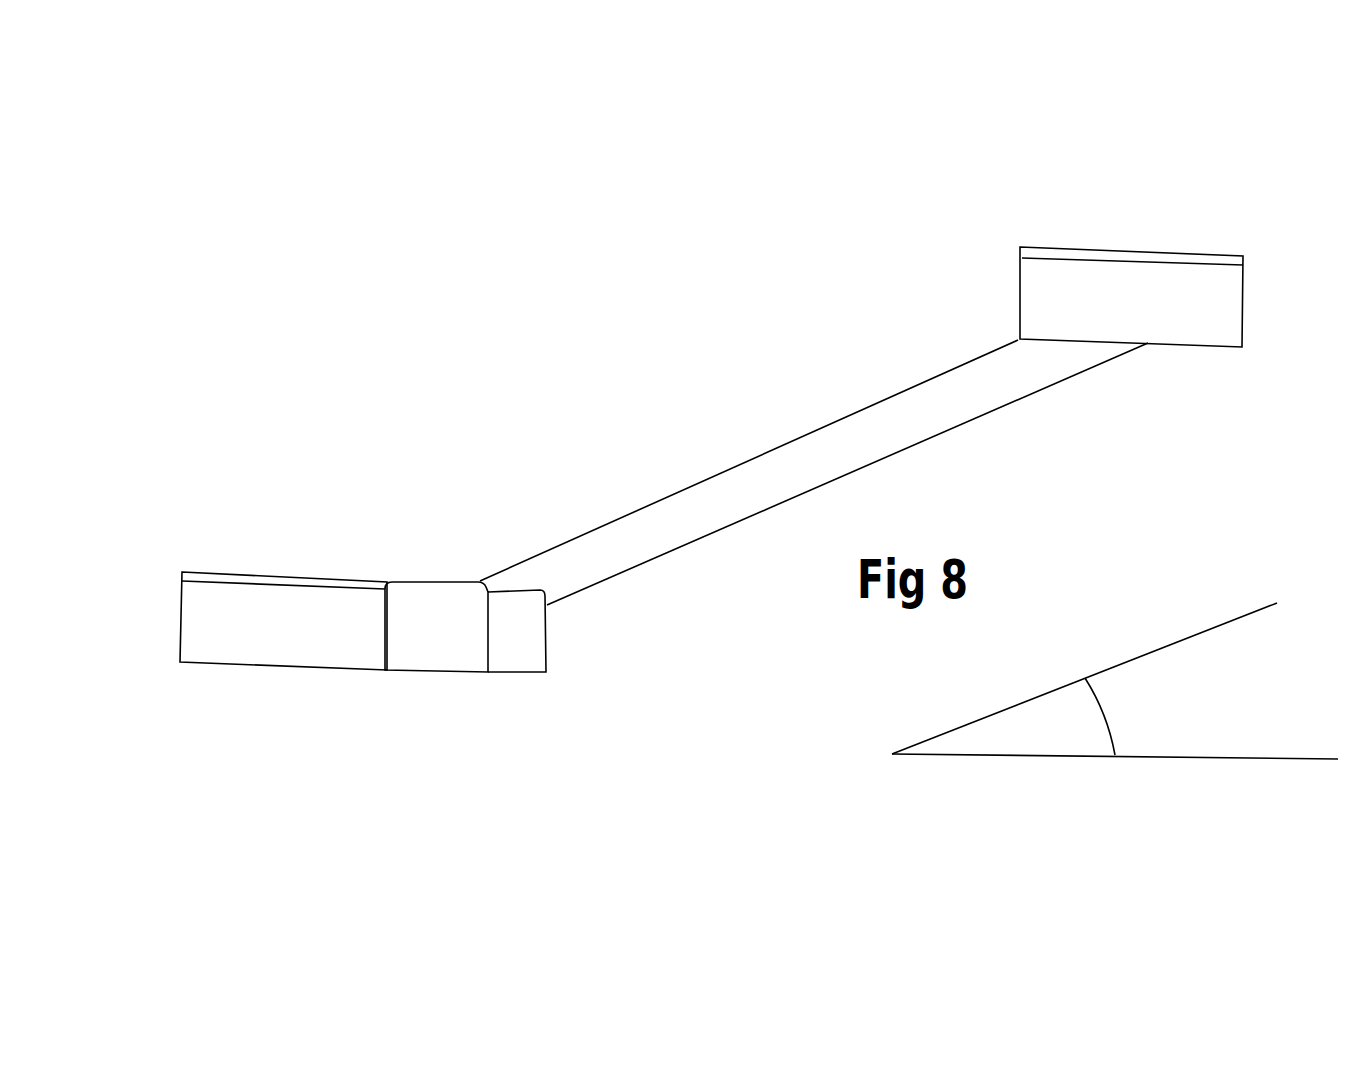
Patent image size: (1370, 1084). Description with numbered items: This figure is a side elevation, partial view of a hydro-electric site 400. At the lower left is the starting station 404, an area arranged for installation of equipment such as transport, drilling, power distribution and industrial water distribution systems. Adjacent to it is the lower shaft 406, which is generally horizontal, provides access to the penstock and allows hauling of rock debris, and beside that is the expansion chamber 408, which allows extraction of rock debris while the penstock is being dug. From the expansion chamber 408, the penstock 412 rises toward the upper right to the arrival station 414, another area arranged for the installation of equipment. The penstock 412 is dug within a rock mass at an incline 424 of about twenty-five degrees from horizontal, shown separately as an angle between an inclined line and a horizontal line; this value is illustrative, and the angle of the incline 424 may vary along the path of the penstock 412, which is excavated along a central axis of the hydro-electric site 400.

The hydro-electric site 400 is at (250, 178).
The starting station 404 is at (202, 573).
The lower shaft 406 is at (458, 677).
The expansion chamber 408 is at (547, 637).
The penstock 412 is at (848, 403).
The arrival station 414 is at (1113, 250).
The incline 424 is at (1113, 713).